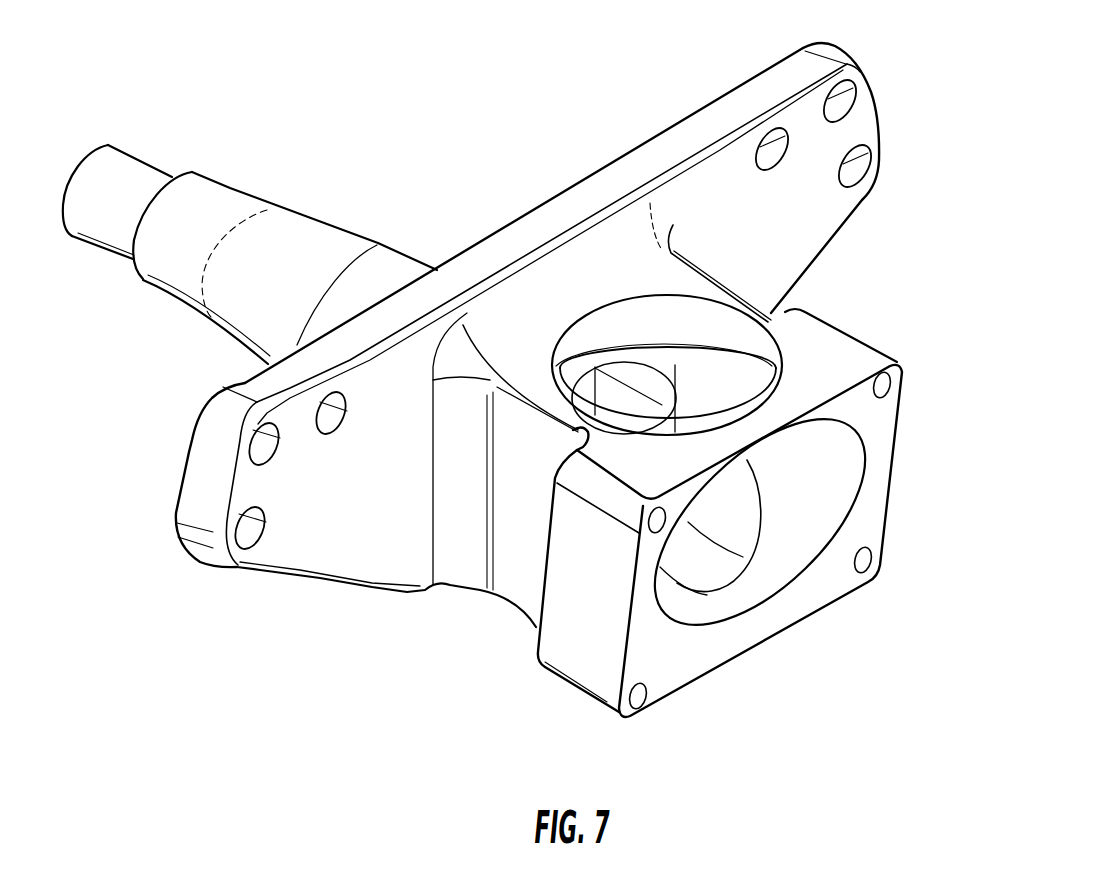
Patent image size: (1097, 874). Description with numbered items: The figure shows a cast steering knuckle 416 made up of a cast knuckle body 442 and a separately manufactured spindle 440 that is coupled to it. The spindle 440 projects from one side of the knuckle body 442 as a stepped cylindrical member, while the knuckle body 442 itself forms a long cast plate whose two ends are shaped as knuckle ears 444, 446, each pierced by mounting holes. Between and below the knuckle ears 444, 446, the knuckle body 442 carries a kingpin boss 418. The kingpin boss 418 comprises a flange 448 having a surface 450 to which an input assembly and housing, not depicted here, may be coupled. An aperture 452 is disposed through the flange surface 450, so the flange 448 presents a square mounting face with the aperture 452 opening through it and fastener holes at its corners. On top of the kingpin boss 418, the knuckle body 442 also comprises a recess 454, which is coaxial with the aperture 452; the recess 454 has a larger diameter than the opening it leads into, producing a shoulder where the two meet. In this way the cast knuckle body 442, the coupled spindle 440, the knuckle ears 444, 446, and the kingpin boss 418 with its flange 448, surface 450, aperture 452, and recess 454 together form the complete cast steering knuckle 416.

The cast steering knuckle 416 is at (440, 147).
The spindle 440 is at (289, 235).
The knuckle body 442 is at (548, 222).
The knuckle ear 444 is at (840, 142).
The knuckle ear 446 is at (220, 481).
The kingpin boss 418 is at (712, 293).
The recess 454 is at (615, 388).
The aperture 452 is at (825, 490).
The flange 448 is at (592, 672).
The surface 450 is at (673, 675).